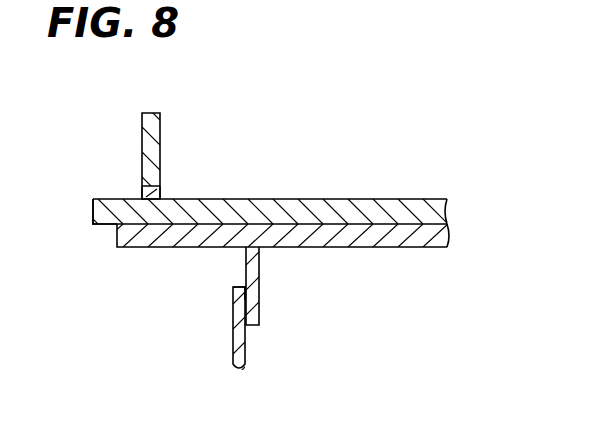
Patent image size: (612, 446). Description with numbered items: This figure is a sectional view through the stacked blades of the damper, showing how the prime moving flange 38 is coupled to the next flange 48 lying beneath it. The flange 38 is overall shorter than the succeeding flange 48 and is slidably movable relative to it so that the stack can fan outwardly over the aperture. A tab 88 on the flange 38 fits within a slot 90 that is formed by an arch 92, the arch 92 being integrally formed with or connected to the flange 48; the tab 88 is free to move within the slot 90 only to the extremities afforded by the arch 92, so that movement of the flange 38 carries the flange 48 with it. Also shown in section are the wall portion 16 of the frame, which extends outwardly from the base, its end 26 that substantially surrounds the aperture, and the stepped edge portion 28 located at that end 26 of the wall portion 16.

The wall portion 16 is at (230, 348).
The end 26 is at (233, 290).
The stepped edge portion 28 is at (257, 276).
The flange 38 is at (318, 203).
The flange 48 is at (395, 238).
The tab 88 is at (120, 210).
The slot 90 is at (153, 191).
The arch 92 is at (152, 130).